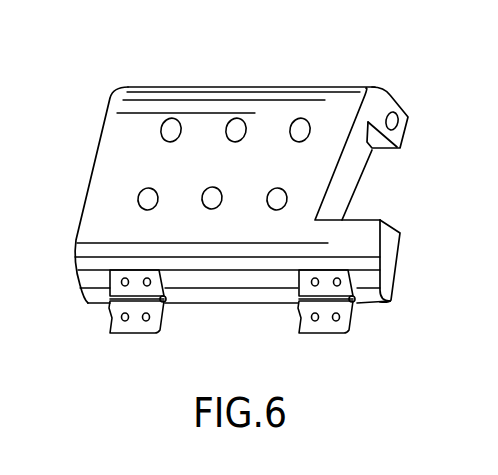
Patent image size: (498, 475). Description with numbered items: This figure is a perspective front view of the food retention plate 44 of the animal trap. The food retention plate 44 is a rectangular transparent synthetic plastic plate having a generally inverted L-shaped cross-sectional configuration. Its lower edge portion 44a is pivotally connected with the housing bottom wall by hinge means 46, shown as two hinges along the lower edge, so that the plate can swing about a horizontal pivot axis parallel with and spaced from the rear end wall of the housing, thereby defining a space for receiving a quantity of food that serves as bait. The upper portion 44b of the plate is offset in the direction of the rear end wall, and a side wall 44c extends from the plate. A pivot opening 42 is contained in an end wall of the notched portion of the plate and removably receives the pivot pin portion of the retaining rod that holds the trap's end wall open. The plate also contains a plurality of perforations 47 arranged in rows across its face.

The food retention plate 44 is at (102, 133).
The lower edge portion 44a is at (252, 277).
The upper portion 44b is at (380, 102).
The side wall of bracket 44c is at (378, 197).
The pivot opening 42 is at (394, 118).
The hinge means 46 is at (115, 318).
The perforations 47 is at (228, 117).